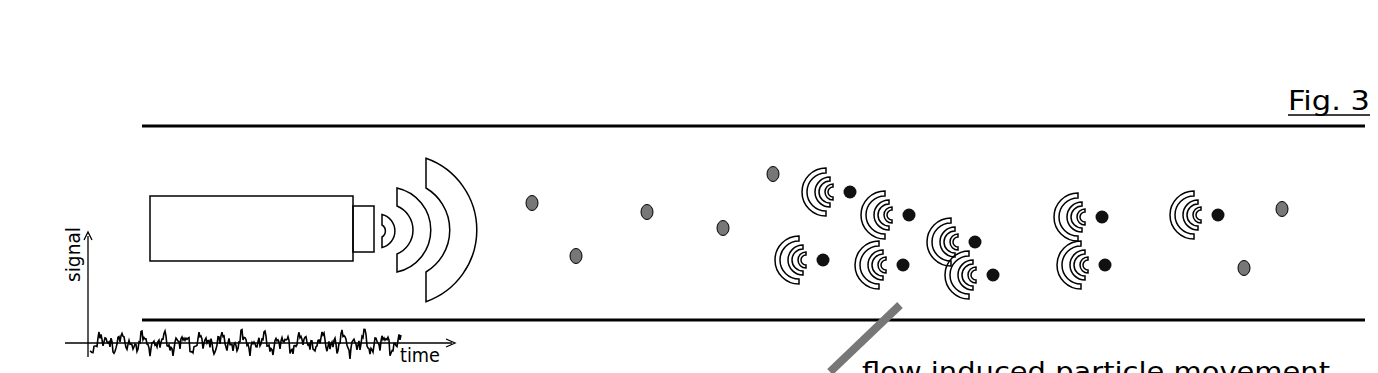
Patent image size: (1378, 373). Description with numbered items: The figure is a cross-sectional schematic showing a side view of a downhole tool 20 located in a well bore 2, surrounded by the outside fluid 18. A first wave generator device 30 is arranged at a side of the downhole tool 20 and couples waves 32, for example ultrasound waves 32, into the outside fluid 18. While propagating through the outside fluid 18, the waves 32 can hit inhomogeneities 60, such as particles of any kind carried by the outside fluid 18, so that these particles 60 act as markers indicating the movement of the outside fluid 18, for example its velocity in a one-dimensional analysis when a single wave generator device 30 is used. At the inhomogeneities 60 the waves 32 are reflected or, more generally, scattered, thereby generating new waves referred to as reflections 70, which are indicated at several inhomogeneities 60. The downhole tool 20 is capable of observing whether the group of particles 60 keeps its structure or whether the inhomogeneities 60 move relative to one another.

The well bore 2 is at (158, 123).
The outside fluid 18 is at (687, 152).
The downhole tool 20 is at (272, 197).
The first wave generator device 30 is at (362, 205).
The waves 32 is at (450, 162).
The inhomogeneities 60 is at (532, 197).
The reflections 70 is at (818, 171).